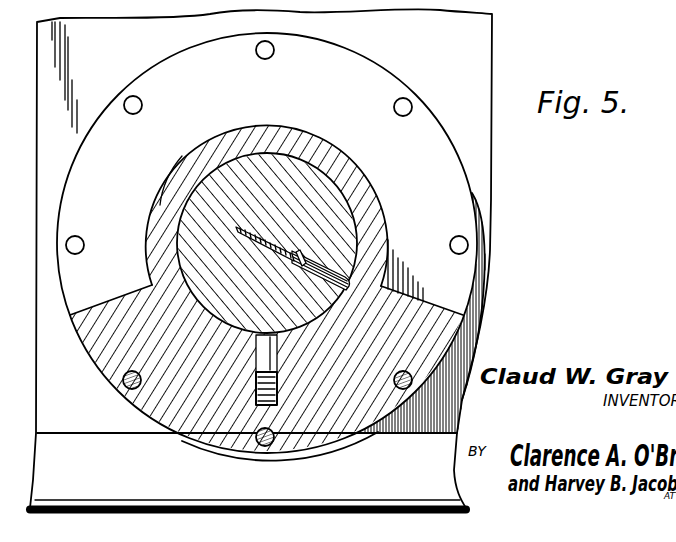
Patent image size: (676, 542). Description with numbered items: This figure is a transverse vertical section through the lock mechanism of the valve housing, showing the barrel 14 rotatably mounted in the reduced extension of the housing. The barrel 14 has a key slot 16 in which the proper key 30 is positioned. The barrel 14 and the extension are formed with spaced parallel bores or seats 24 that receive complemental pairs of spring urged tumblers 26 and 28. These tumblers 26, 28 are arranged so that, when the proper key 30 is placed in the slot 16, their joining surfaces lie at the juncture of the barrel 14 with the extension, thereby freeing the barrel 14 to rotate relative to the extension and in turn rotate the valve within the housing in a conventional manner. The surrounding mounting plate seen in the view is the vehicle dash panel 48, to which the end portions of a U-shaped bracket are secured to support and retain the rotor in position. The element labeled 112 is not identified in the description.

The barrel 14 is at (297, 178).
The key slot 16 is at (260, 240).
The bores or seats 24 is at (308, 258).
The tumbler 26 is at (314, 283).
The tumbler 28 is at (278, 365).
The key 30 is at (262, 242).
The vehicle dash panel 48 is at (482, 70).
The bushing 112 is at (368, 198).